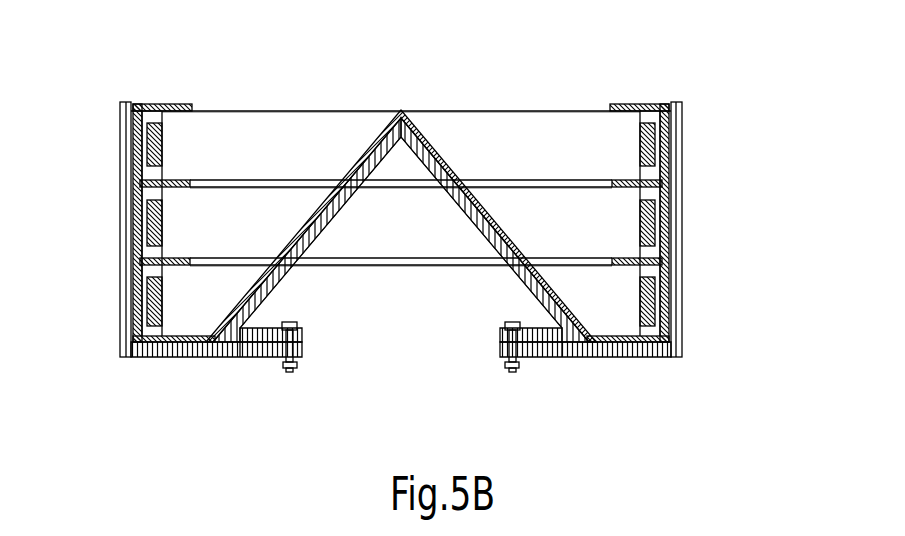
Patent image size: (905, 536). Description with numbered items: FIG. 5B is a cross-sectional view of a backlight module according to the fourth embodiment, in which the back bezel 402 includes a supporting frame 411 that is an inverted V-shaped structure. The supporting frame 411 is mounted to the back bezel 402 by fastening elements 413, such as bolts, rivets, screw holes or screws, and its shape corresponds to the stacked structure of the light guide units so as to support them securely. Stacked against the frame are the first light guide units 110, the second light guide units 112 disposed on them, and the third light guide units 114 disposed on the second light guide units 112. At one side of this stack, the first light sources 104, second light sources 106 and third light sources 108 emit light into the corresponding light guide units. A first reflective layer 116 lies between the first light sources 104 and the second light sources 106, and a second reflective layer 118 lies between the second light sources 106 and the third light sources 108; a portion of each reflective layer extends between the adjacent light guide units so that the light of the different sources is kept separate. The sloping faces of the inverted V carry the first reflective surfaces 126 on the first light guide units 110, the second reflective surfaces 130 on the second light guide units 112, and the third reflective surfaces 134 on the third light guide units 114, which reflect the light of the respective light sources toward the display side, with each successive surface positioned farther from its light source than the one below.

The first light sources 104 is at (672, 300).
The second light sources 106 is at (672, 222).
The third light sources 108 is at (672, 148).
The first light guide units 110 is at (228, 312).
The second light guide units 112 is at (260, 239).
The third light guide units 114 is at (282, 167).
The first reflective layer 116 is at (672, 258).
The second reflective layer 118 is at (672, 182).
The first reflective surfaces 126 is at (528, 280).
The second reflective surfaces 130 is at (472, 215).
The third reflective surfaces 134 is at (430, 165).
The back bezel 402 is at (153, 357).
The supporting frame 411 is at (277, 283).
The fastening elements 413 is at (502, 368).